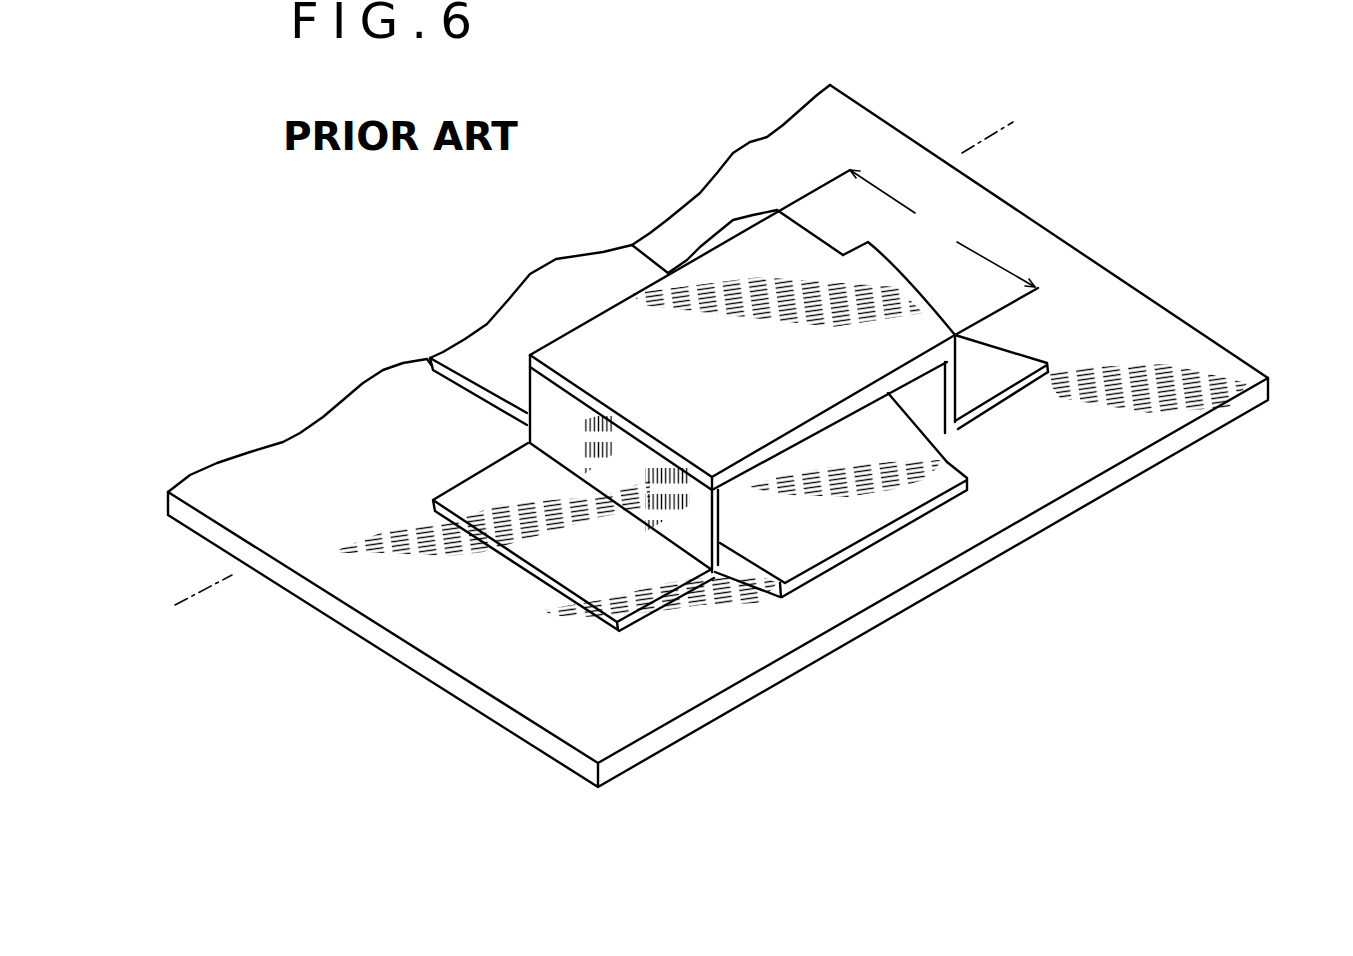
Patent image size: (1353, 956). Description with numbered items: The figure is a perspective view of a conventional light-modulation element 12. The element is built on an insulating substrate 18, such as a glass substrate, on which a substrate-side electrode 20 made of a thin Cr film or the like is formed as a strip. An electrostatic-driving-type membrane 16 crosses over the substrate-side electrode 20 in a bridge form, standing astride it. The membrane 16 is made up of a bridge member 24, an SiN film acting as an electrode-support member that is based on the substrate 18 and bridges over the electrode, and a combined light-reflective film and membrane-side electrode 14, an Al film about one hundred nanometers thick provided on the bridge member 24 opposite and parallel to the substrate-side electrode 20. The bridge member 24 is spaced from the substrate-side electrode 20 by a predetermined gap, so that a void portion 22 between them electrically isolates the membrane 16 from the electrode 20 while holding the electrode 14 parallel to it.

The light-modulation element 12 is at (937, 90).
The combined light-reflective film and membrane-side electrode 14 is at (960, 340).
The electrostatic-driving-type membrane 16 is at (1207, 197).
The insulating substrate 18 is at (978, 518).
The substrate-side electrode 20 is at (948, 468).
The void portion 22 is at (833, 467).
The bridge member 24 is at (958, 346).